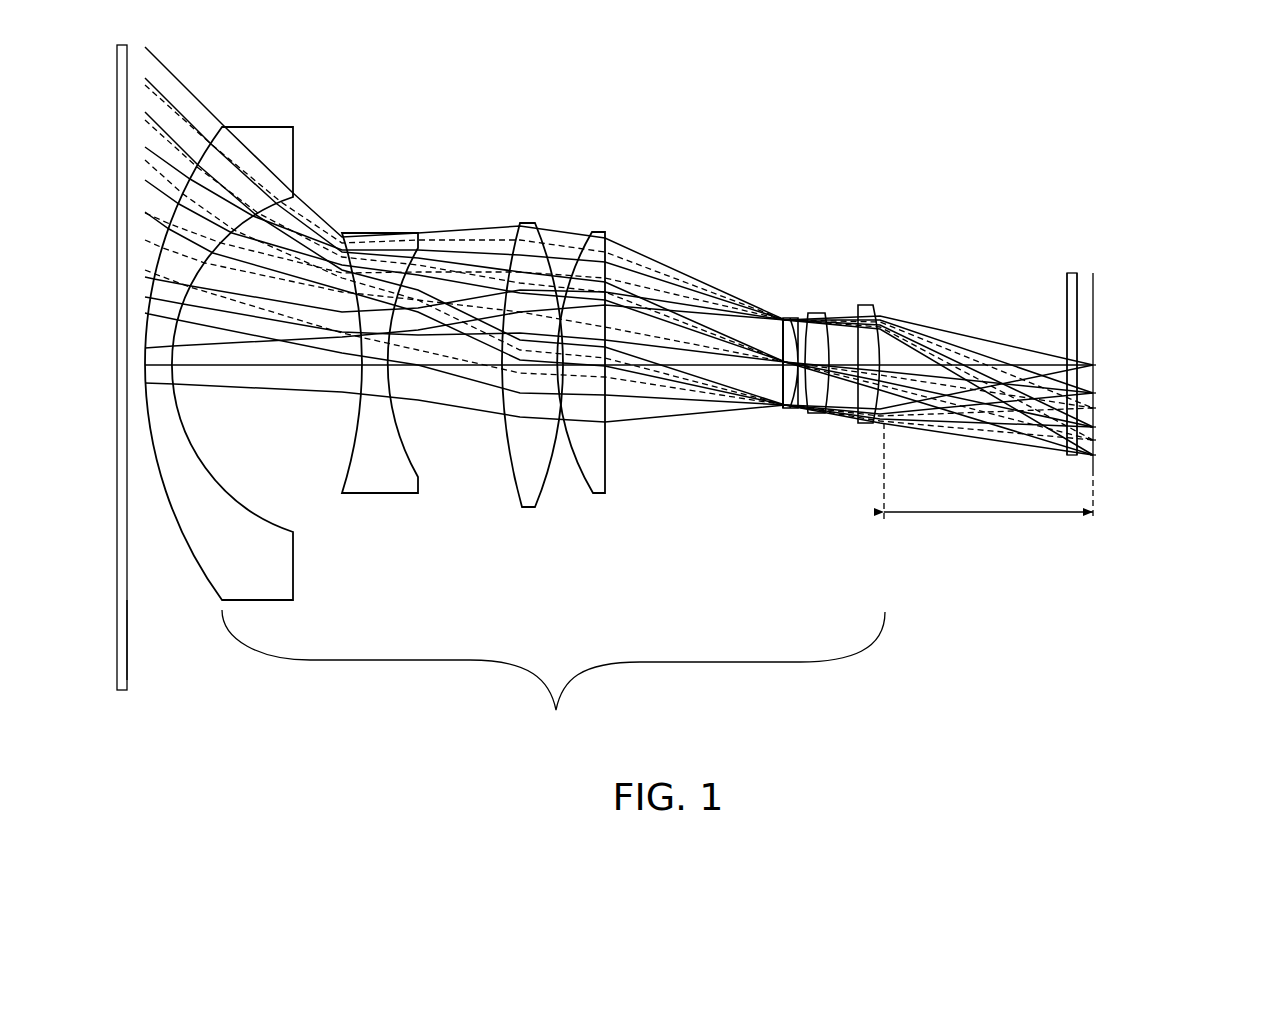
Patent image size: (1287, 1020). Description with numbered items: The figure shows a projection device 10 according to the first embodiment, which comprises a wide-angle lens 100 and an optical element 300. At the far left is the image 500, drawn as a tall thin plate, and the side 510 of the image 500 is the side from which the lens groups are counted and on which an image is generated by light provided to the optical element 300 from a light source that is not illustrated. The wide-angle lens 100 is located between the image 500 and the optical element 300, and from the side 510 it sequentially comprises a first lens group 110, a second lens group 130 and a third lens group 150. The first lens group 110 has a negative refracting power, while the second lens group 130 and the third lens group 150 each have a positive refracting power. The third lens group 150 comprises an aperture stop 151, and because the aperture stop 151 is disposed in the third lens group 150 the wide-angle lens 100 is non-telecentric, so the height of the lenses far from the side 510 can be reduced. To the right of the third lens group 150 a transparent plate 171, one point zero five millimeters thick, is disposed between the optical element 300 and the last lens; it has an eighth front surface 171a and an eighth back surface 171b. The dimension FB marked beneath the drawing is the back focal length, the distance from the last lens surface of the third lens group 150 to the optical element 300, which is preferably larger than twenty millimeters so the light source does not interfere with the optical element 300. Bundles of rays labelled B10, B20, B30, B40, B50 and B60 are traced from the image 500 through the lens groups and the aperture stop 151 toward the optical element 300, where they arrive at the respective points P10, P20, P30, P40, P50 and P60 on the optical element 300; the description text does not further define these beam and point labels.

The projection device 10 is at (1165, 763).
The wide-angle lens 100 is at (553, 680).
The first lens group 110 is at (222, 115).
The second lens group 130 is at (520, 214).
The third lens group 150 is at (785, 292).
The aperture stop 151 is at (783, 316).
The transparent plate 171 is at (1072, 273).
The eighth front surface 171a is at (1062, 292).
The eighth back surface 171b is at (1080, 292).
The optical element 300 is at (1097, 296).
The image 500 is at (127, 391).
The side of the image 510 is at (140, 642).
The back focal length FB is at (988, 486).
The on-axis light beam B10 is at (1084, 362).
The light beam B20 is at (1086, 392).
The light beam B30 is at (1097, 408).
The light beam B40 is at (1097, 437).
The light beam B50 is at (1100, 468).
The outermost light beam B60 is at (1040, 448).
The on-axis image point P10 is at (1093, 365).
The image point P20 is at (1093, 393).
The image point P30 is at (1093, 415).
The image point P40 is at (1093, 435).
The image point P50 is at (1093, 452).
The outermost image point P60 is at (1093, 462).